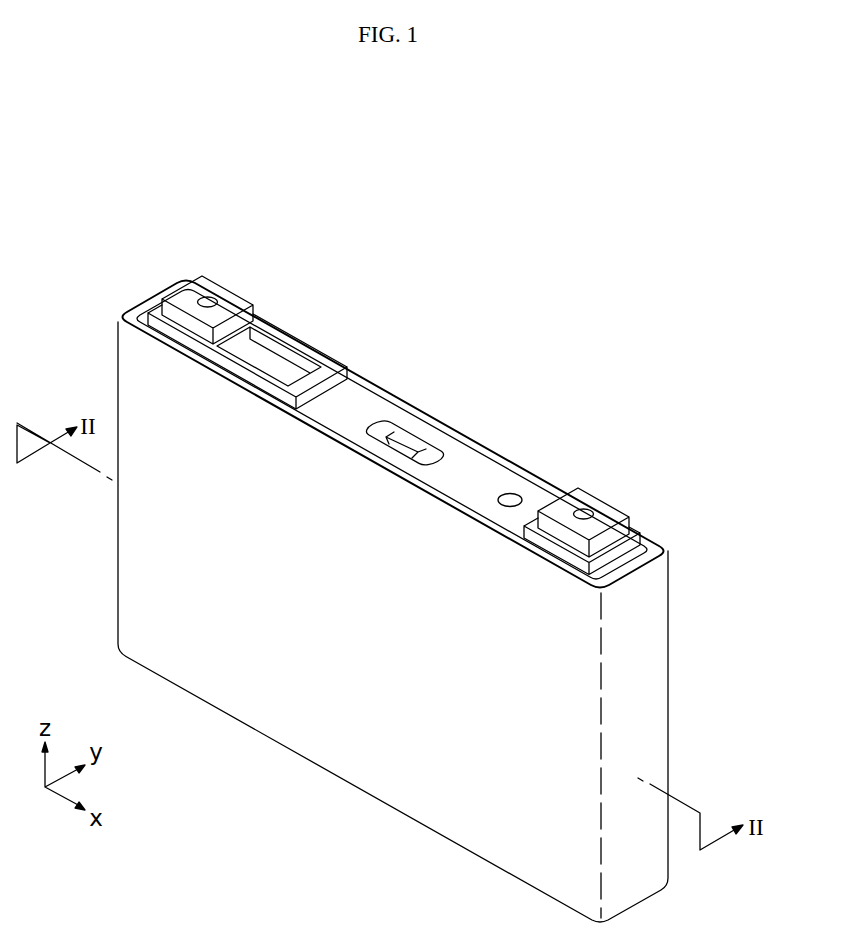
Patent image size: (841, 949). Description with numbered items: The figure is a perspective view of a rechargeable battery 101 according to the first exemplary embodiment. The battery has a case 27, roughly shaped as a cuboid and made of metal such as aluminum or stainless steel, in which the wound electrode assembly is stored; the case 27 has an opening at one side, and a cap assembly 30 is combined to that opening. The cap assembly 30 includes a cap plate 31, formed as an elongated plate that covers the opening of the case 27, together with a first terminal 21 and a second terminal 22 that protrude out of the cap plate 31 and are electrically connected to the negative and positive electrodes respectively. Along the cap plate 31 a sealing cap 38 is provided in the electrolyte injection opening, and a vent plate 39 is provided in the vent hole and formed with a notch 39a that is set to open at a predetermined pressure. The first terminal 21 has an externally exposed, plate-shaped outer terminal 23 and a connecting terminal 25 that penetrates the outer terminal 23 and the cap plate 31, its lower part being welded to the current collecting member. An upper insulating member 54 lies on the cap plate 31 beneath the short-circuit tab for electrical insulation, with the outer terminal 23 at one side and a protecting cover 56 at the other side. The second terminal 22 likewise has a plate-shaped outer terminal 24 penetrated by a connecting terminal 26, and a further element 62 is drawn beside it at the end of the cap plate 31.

The rechargeable battery 101 is at (449, 242).
The first terminal 21 is at (160, 219).
The second terminal 22 is at (652, 430).
The outer terminal 23 is at (190, 287).
The outer terminal 24 is at (575, 488).
The connecting terminal 25 is at (208, 298).
The connecting terminal 26 is at (587, 512).
The case 27 is at (320, 745).
The cap assembly 30 is at (487, 457).
The cap plate 31 is at (364, 402).
The sealing cap 38 is at (511, 496).
The vent plate 39 is at (408, 436).
The notch 39a is at (421, 450).
The upper insulating member 54 is at (335, 366).
The protecting cover 56 is at (273, 352).
The connecting plate 62 is at (633, 528).